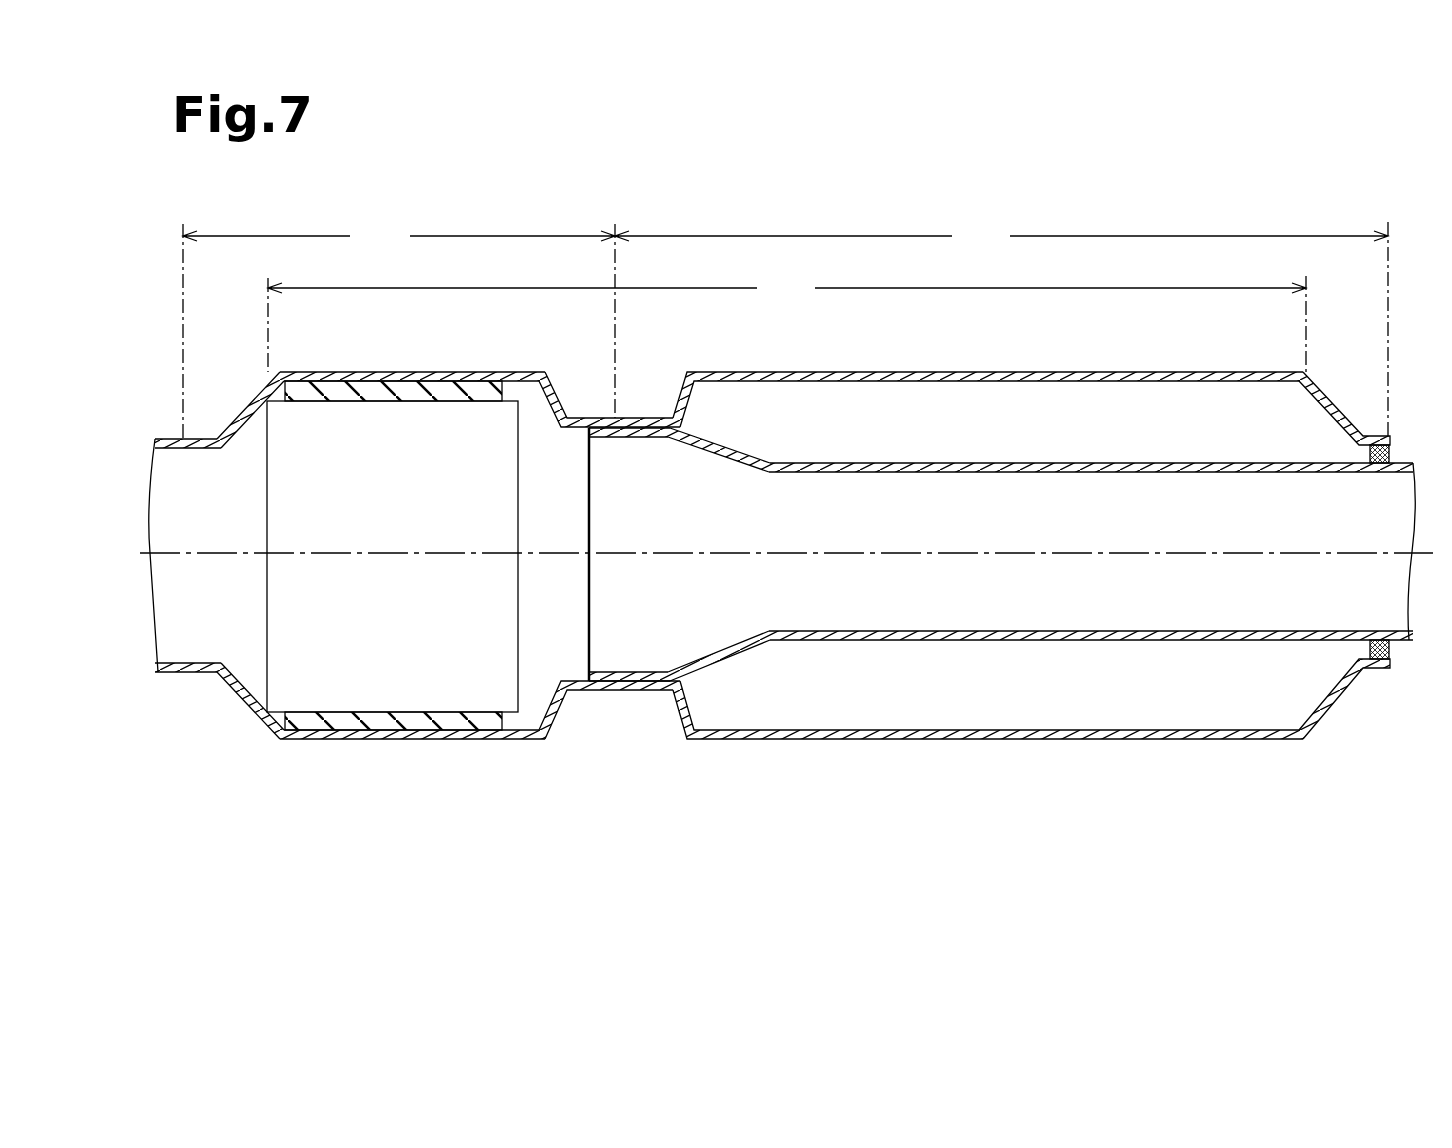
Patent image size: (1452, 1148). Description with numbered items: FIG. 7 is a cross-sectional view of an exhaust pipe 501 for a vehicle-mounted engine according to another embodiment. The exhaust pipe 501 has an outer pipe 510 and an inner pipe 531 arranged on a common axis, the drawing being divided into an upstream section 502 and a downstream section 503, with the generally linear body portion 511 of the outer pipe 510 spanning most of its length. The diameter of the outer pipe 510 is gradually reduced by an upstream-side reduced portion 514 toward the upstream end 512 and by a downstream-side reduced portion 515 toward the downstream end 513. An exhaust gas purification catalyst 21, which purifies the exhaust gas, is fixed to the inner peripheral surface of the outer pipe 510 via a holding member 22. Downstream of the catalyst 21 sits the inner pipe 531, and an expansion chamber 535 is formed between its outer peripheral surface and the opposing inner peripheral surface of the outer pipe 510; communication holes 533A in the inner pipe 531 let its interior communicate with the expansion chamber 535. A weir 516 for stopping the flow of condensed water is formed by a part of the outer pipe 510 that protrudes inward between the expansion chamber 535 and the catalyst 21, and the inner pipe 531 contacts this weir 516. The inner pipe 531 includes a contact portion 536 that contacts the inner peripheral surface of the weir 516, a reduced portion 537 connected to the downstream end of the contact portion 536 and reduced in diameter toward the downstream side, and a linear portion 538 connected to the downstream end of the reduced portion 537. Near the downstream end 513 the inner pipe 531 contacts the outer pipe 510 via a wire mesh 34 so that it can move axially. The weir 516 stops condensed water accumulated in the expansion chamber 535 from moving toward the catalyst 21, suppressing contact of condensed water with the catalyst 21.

The exhaust gas purifying device 501 is at (792, 842).
The upstream portion 502 is at (399, 332).
The downstream portion 503 is at (1001, 329).
The outer pipe 510 is at (913, 370).
The length of outer shell 511 is at (787, 324).
The lower inlet tapered portion 512 is at (196, 689).
The lower outlet tapered portion 513 is at (1368, 688).
The upper inlet tapered portion 514 is at (230, 382).
The upper outlet tapered portion 515 is at (1349, 367).
The weir 516 is at (574, 707).
The exhaust gas purification catalyst 21 is at (518, 586).
The holding member 22 is at (506, 390).
The inner pipe 531 is at (1002, 554).
The contact portion 536 is at (623, 438).
The reduced portion 537 is at (719, 457).
The linear portion 538 is at (1091, 551).
The downstream end of inner pipe 533A is at (1133, 603).
The expansion chamber 535 is at (1014, 441).
The wire mesh 34 is at (1378, 636).